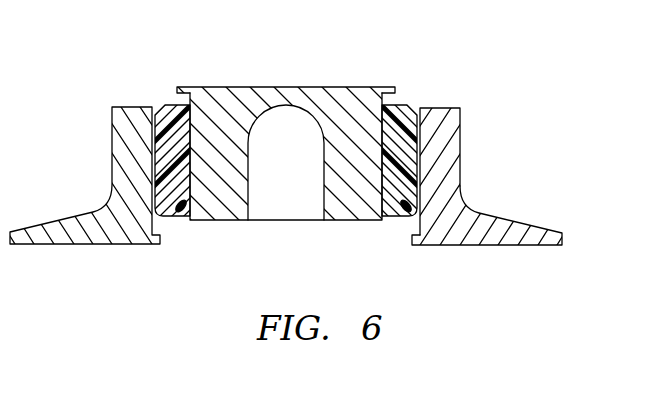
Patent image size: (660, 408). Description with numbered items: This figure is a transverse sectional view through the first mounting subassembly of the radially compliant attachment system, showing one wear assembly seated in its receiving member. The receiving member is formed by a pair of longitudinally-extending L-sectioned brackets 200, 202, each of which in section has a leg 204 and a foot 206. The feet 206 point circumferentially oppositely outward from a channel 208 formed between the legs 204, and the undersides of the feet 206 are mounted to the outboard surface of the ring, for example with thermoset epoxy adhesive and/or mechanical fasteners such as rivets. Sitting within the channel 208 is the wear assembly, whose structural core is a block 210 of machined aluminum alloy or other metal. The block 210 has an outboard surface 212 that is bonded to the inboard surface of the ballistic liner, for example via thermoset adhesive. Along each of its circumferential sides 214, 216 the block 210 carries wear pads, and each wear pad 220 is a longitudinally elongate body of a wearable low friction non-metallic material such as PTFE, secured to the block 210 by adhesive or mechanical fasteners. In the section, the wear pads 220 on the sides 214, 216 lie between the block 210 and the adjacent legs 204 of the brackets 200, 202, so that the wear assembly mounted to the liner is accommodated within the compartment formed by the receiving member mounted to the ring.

The L-sectioned bracket 200 is at (123, 100).
The L-sectioned bracket 202 is at (449, 100).
The leg 204 is at (447, 153).
The foot 206 is at (495, 226).
The channel 208 is at (310, 257).
The structural core 210 is at (320, 102).
The outboard surface 212 is at (245, 87).
The circumferential side 214 is at (177, 213).
The circumferential side 216 is at (393, 220).
The wear pad 220 is at (404, 200).